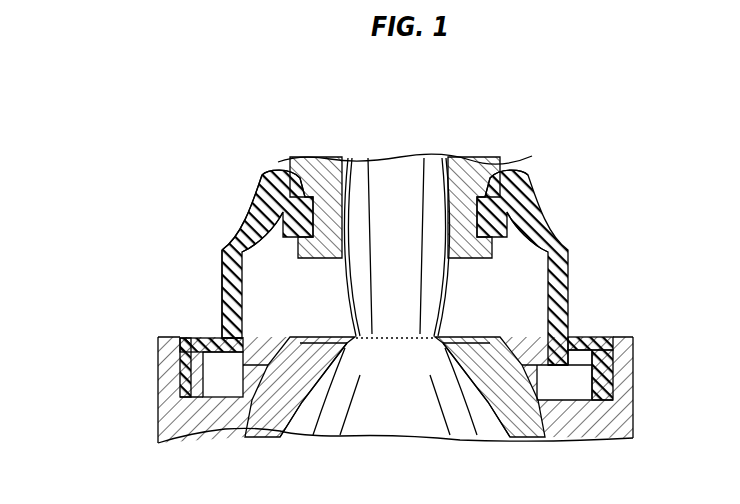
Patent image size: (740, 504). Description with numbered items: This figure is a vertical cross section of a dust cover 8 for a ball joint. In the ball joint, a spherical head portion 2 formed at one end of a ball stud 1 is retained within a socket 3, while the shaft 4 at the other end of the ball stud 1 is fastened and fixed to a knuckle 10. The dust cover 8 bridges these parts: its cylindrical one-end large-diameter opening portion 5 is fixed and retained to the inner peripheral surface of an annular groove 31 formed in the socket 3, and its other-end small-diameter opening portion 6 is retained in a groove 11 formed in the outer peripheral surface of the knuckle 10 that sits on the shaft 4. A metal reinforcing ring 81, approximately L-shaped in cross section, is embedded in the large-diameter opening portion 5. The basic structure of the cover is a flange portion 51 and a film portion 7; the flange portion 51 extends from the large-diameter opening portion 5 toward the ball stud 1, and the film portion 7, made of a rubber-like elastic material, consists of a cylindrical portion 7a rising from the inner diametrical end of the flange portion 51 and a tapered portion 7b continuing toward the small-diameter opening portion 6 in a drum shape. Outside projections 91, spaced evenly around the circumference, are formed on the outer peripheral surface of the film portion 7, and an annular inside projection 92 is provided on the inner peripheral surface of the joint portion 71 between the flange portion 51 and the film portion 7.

The ball stud 1 is at (328, 221).
The spherical head portion 2 is at (448, 425).
The socket 3 is at (395, 409).
The shaft 4 is at (405, 172).
The one-end large-diameter opening portion 5 is at (424, 340).
The other-end small-diameter opening portion 6 is at (532, 196).
The film portion 7 is at (328, 221).
The cylindrical portion 7a is at (222, 294).
The tapered portion 7b is at (246, 218).
The dust cover 8 is at (216, 205).
The knuckle 10 is at (500, 153).
The groove 11 is at (327, 157).
The annular groove 31 is at (230, 398).
The flange portion 51 is at (588, 338).
The joint portion 71 is at (222, 338).
The large-diameter opening side metal reinforcing ring 81 is at (614, 383).
The outside projections 91 is at (567, 238).
The annular inside projection 92 is at (550, 430).